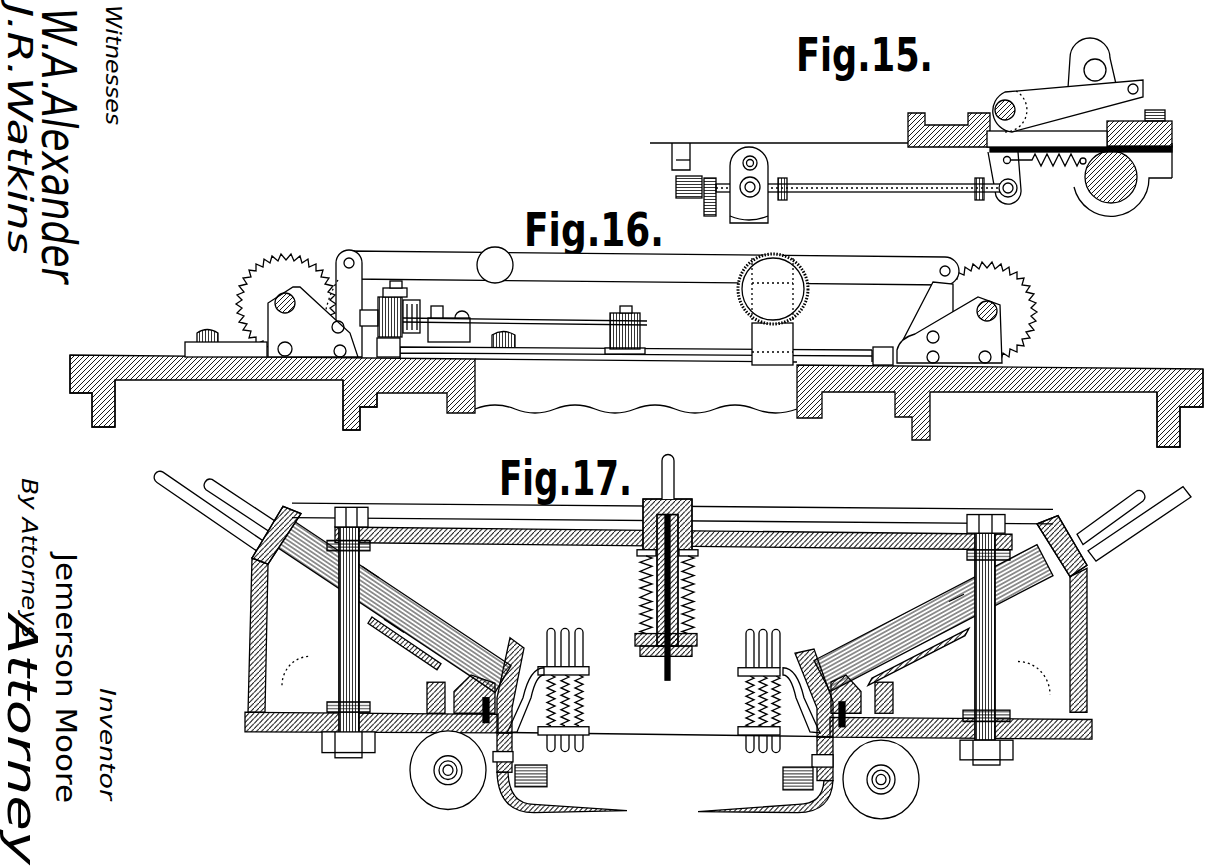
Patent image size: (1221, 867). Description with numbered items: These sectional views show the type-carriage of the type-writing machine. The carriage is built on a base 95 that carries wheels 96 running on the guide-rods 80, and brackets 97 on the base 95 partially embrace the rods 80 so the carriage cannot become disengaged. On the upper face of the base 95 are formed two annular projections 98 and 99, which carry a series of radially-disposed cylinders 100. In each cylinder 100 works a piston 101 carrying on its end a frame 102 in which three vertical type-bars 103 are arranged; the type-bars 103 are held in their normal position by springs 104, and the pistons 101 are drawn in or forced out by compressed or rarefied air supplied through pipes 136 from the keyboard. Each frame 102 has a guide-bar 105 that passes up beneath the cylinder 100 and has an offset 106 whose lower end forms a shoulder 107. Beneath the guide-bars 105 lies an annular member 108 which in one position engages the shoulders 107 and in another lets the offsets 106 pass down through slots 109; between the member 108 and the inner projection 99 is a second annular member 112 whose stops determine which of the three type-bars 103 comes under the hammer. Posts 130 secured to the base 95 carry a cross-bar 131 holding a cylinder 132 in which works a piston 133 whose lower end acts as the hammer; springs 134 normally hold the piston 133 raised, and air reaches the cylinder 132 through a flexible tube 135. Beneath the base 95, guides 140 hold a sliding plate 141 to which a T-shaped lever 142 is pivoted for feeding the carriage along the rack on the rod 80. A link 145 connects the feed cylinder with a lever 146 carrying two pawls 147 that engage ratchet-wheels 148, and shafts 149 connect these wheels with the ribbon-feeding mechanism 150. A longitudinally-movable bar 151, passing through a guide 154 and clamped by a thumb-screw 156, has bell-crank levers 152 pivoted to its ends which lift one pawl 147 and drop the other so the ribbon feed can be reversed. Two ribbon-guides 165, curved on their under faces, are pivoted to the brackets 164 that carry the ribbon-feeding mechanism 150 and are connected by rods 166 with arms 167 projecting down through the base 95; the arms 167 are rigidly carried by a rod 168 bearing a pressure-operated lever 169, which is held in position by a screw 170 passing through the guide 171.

In FIG. 15, the guide-rods 80 is at (1113, 200).
In FIG. 15, the base 95 is at (945, 124).
In FIG. 16, the base 95 is at (238, 381).
In FIG. 17, the base 95 is at (297, 724).
In FIG. 17, the wheels 96 is at (272, 680).
In FIG. 15, the brackets 97 is at (1143, 191).
In FIG. 16, the annular projection 98 is at (92, 411).
In FIG. 17, the annular projection 98 is at (245, 592).
In FIG. 16, the annular projection 99 is at (462, 413).
In FIG. 17, the annular projection 99 is at (505, 648).
In FIG. 17, the cylinders 100 is at (433, 612).
In FIG. 17, the pistons 101 is at (530, 640).
In FIG. 17, the frame 102 is at (580, 664).
In FIG. 17, the type-bars 103 is at (767, 627).
In FIG. 17, the springs 104 is at (732, 686).
In FIG. 17, the guide-bar 105 is at (187, 497).
In FIG. 17, the offset 106 is at (314, 585).
In FIG. 17, the shoulder 107 is at (352, 622).
In FIG. 17, the annular member 108 is at (380, 630).
In FIG. 17, the slots 109 is at (385, 622).
In FIG. 17, the annular member 112 is at (470, 670).
In FIG. 17, the posts 130 is at (330, 652).
In FIG. 17, the cross-bar 131 is at (442, 525).
In FIG. 17, the cylinder 132 is at (680, 570).
In FIG. 17, the piston 133 is at (664, 568).
In FIG. 17, the springs 134 is at (641, 584).
In FIG. 17, the flexible tube 135 is at (676, 477).
In FIG. 17, the pipes 136 is at (240, 483).
In FIG. 16, the guides 140 is at (192, 348).
In FIG. 16, the sliding plate 141 is at (249, 347).
In FIG. 16, the T-shaped lever 142 is at (420, 340).
In FIG. 16, the link 145 is at (530, 312).
In FIG. 16, the lever 146 is at (624, 360).
In FIG. 16, the pawls 147 is at (555, 354).
In FIG. 16, the ratchet-wheels 148 is at (245, 293).
In FIG. 16, the shafts 149 is at (286, 297).
In FIG. 15, the ribbon-feeding mechanism 150 is at (706, 207).
In FIG. 17, the ribbon-feeding mechanism 150 is at (401, 762).
In FIG. 16, the longitudinally-movable bar 151 is at (654, 268).
In FIG. 16, the bell-crank levers 152 is at (338, 286).
In FIG. 16, the guide 154 is at (793, 338).
In FIG. 16, the thumb-screw 156 is at (773, 289).
In FIG. 15, the brackets 164 is at (715, 153).
In FIG. 17, the brackets 164 is at (489, 764).
In FIG. 15, the ribbon-guides 165 is at (762, 208).
In FIG. 17, the ribbon-guides 165 is at (571, 797).
In FIG. 15, the rods 166 is at (884, 193).
In FIG. 17, the rods 166 is at (539, 760).
In FIG. 15, the arms 167 is at (993, 168).
In FIG. 15, the rod 168 is at (1005, 99).
In FIG. 15, the lever 169 is at (1068, 106).
In FIG. 15, the screw 170 is at (1099, 67).
In FIG. 15, the guide 171 is at (1080, 45).